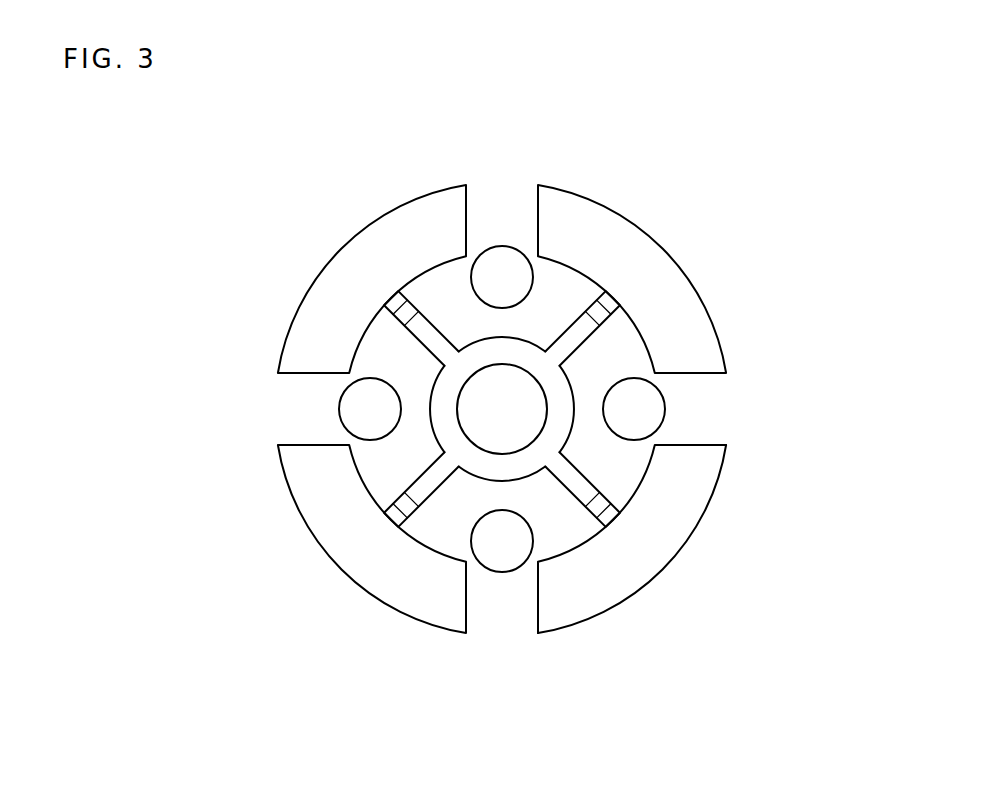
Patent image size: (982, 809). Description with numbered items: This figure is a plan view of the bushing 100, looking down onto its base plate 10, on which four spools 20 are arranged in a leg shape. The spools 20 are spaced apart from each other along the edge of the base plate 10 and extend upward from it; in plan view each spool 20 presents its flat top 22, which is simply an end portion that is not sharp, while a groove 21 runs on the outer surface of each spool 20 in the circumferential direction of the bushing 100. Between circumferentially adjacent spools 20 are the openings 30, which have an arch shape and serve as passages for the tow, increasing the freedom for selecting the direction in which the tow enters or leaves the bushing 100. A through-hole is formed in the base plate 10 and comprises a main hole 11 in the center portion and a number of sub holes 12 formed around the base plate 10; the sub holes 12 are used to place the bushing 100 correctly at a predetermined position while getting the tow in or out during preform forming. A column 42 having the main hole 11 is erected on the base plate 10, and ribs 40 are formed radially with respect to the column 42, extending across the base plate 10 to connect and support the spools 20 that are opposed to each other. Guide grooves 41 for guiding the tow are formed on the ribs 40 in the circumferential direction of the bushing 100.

The bushing 100 is at (320, 598).
The base plate 10 is at (703, 405).
The main hole 11 is at (511, 392).
The sub holes 12 is at (357, 410).
The spools 20 is at (677, 302).
The groove 21 is at (670, 562).
The flat top 22 is at (693, 483).
The openings 30 is at (505, 206).
The ribs 40 is at (580, 485).
The guide grooves 41 is at (412, 312).
The column 42 is at (443, 432).